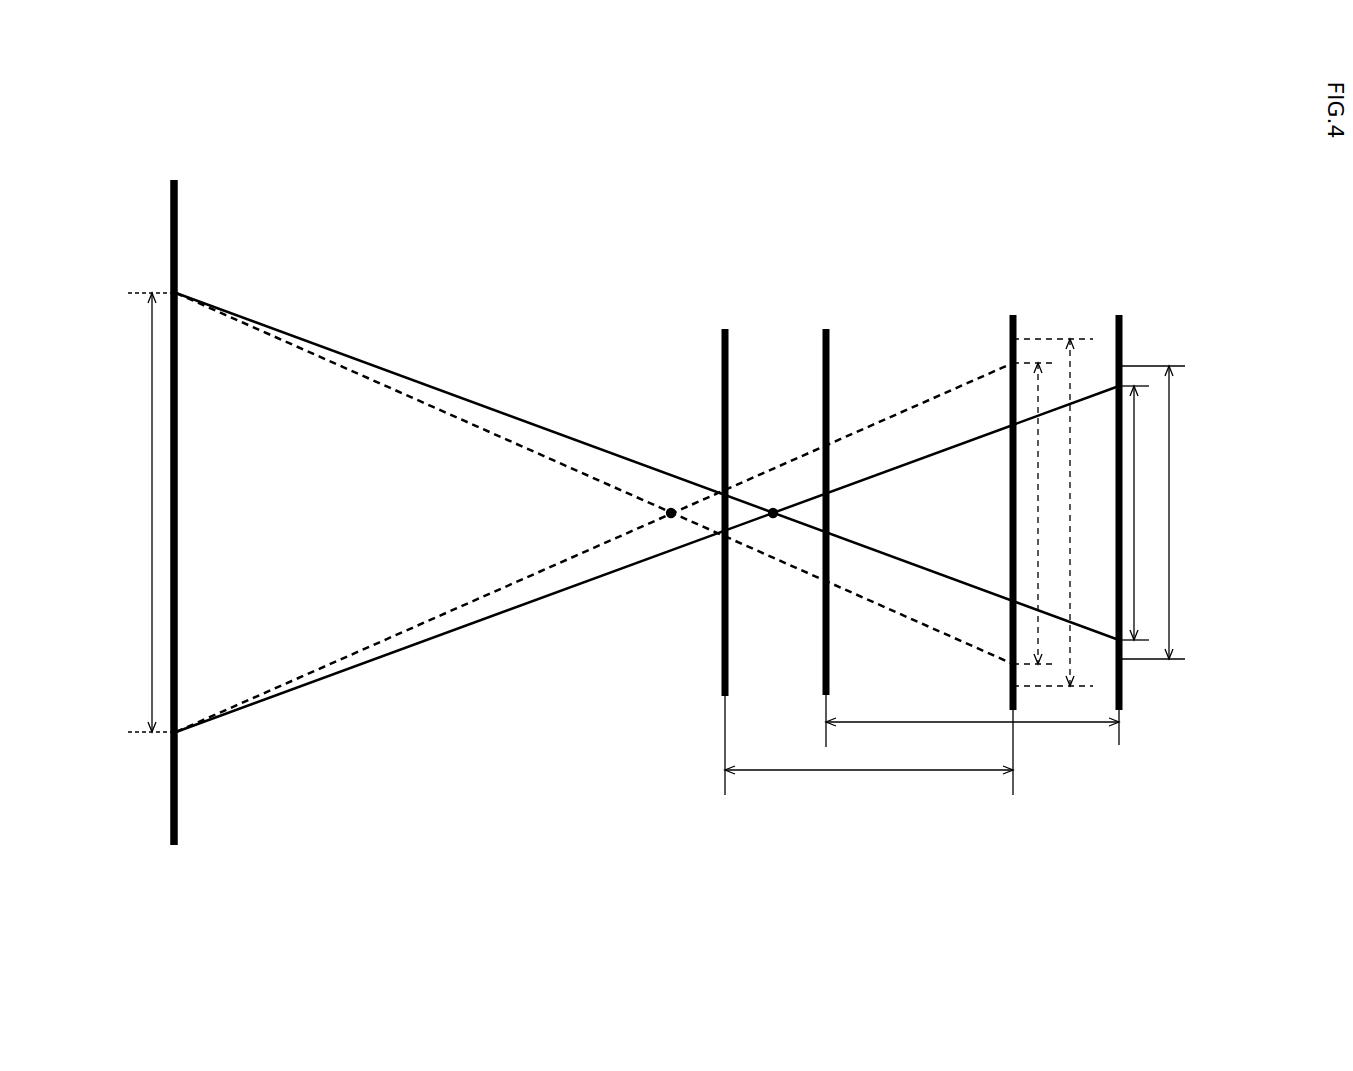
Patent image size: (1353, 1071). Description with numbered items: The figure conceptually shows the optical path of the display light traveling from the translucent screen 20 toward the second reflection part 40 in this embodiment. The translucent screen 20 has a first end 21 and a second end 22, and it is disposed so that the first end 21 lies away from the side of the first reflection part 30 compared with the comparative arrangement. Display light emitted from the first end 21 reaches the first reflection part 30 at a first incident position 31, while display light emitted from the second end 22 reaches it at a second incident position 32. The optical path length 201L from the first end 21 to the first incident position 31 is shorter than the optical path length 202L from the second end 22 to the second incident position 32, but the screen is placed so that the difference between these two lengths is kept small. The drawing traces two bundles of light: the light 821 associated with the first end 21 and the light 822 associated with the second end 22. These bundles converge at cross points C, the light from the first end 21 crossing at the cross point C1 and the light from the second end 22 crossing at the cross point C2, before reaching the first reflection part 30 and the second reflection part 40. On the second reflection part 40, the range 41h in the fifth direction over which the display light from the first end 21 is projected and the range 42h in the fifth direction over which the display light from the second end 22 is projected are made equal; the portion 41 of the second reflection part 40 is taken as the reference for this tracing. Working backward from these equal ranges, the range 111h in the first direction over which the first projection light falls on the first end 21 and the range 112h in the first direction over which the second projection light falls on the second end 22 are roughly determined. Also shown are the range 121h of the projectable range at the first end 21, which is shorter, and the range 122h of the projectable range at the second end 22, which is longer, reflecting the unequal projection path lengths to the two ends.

The second reflection part 40 is at (300, 512).
The second reflection part range for display light 201 41 is at (177, 250).
The range in the fifth direction of display light 201 41h is at (126, 512).
The range in the fifth direction of display light 202 42h is at (152, 462).
The first reflection part 30 is at (721, 487).
The first incident position 31 is at (823, 345).
The second incident position 32 is at (722, 350).
The translucent screen 20 is at (1065, 485).
The first end 21 is at (1123, 315).
The second end 22 is at (1010, 347).
The first light ray 821 is at (925, 463).
The second light ray 822 is at (765, 470).
The focal point C is at (620, 656).
The cross point C1 is at (772, 520).
The cross point C2 is at (668, 518).
The range in the first direction of first projection light 111h is at (1134, 540).
The range in the first direction of second projection light 112h is at (1038, 498).
The range in the first direction of projectable range at first end 121h is at (1169, 583).
The range in the first direction of projectable range at second end 122h is at (1070, 462).
The optical path length of display light 201 201L is at (1062, 722).
The optical path length of display light 202 202L is at (955, 773).